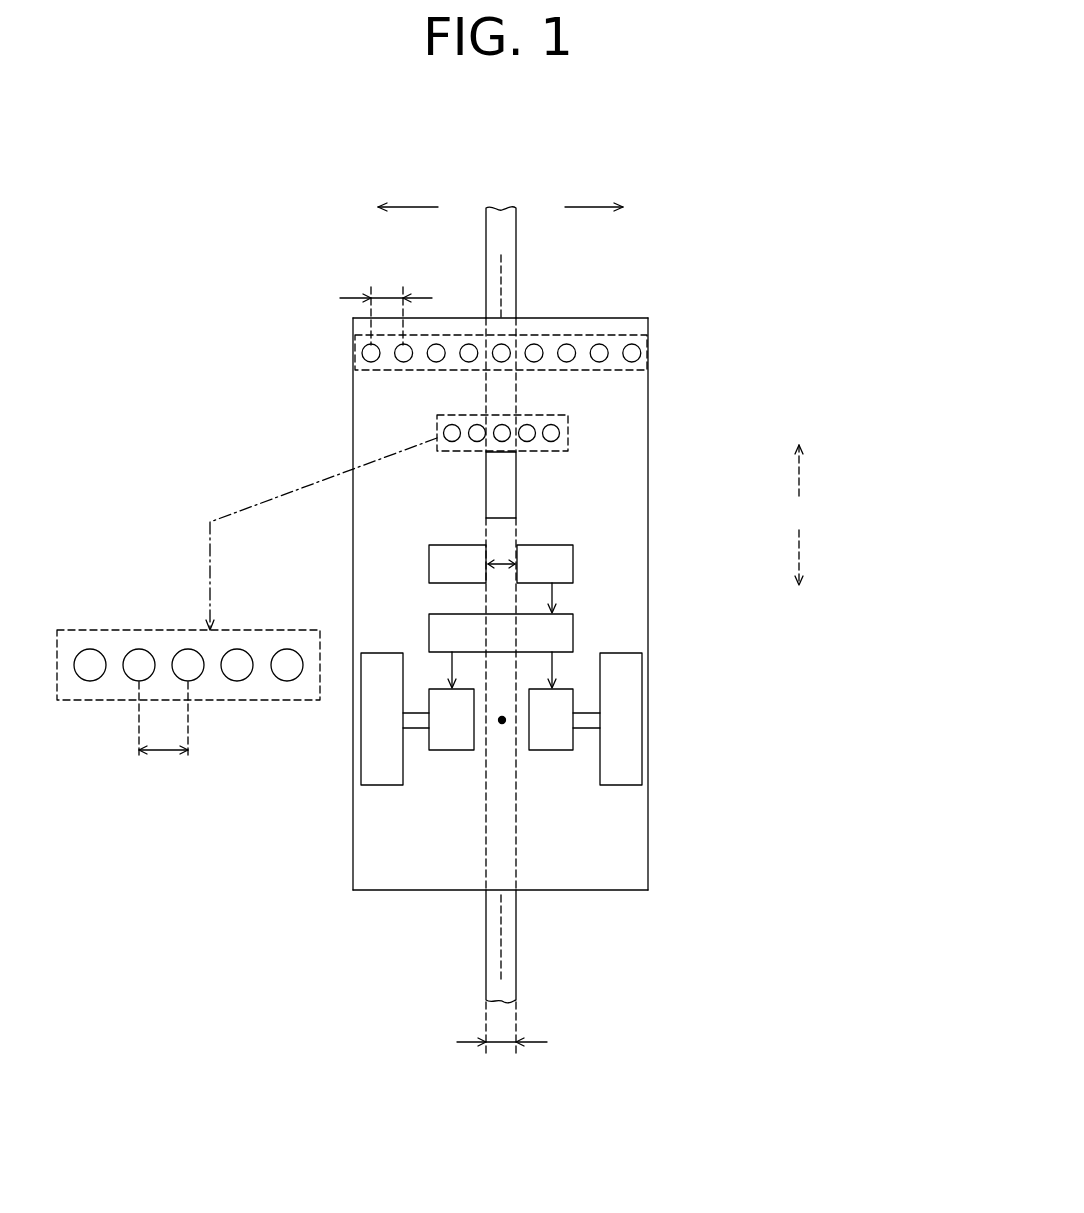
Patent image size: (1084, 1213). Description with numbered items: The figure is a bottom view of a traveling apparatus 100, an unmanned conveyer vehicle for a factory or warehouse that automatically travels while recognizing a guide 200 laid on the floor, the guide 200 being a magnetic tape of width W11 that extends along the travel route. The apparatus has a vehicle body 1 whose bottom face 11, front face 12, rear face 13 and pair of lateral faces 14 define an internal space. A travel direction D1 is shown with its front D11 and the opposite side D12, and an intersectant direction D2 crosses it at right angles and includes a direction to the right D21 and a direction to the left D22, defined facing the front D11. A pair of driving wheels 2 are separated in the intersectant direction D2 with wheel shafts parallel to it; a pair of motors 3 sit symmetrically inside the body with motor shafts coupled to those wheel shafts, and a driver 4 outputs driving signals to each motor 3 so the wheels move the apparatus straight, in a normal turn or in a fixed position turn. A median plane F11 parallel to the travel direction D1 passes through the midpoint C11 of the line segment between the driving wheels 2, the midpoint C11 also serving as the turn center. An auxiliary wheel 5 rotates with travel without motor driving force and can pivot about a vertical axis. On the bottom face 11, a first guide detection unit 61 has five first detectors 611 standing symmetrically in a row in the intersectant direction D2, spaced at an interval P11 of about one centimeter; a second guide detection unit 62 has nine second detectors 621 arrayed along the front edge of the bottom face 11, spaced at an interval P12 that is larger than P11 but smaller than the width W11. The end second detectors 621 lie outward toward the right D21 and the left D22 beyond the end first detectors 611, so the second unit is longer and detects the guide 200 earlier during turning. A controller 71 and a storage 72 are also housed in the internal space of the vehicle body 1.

The vehicle body 1 is at (743, 245).
The driving wheel 2 is at (361, 745).
The motor 3 is at (440, 752).
The driver 4 is at (573, 632).
The auxiliary wheel 5 is at (500, 519).
The bottom face 11 is at (617, 435).
The front face 12 is at (625, 318).
The rear face 13 is at (632, 890).
The lateral face 14 is at (353, 340).
The first guide detection unit 61 is at (547, 452).
The second guide detection unit 62 is at (350, 366).
The controller 71 is at (573, 563).
The storage 72 is at (429, 565).
The traveling apparatus 100 is at (300, 886).
The guide 200 is at (517, 230).
The first detector 611 is at (452, 443).
The second detector 621 is at (371, 363).
The midpoint C11 is at (502, 724).
The travel direction D1 is at (890, 450).
The front D11 is at (799, 472).
The first direction other side D12 is at (799, 557).
The intersectant direction D2 is at (627, 155).
The right D21 is at (592, 207).
The left D22 is at (410, 207).
The median plane F11 is at (503, 273).
The interval P11 is at (163, 736).
The interval P12 is at (386, 301).
The width W11 is at (502, 1042).